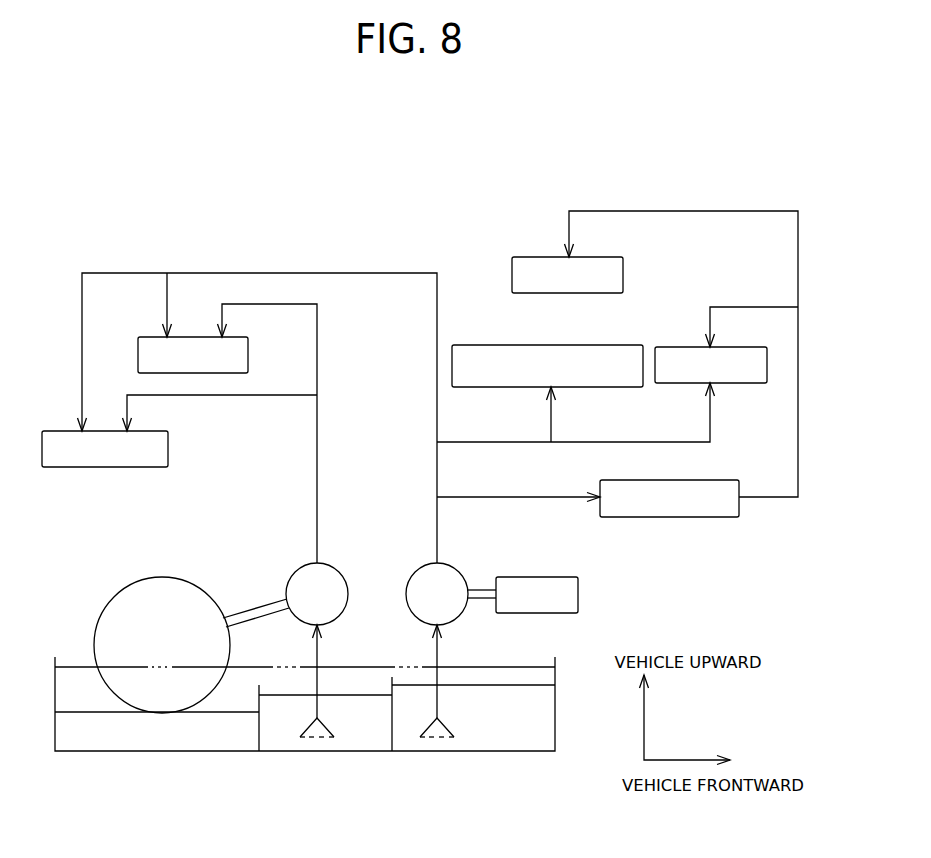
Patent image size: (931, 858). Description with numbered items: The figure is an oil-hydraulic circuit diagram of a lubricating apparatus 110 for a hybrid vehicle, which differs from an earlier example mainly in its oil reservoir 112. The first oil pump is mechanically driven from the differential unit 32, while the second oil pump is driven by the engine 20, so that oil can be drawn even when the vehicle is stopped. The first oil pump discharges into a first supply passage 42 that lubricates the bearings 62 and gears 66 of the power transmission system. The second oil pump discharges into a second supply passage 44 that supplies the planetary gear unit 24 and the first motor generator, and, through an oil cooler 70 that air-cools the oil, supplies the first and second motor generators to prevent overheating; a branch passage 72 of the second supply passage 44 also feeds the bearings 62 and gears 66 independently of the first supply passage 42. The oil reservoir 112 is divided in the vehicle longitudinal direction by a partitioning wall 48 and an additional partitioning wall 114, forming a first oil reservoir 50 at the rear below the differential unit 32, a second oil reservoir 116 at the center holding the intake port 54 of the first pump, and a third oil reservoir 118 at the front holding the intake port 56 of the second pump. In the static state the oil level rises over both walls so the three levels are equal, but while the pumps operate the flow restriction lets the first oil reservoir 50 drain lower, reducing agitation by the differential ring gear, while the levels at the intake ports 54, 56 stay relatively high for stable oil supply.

The lubricating apparatus 110 is at (712, 157).
The second supply passage 44 is at (452, 212).
The branch passage 72 is at (350, 272).
The gears 66 is at (153, 347).
The bearings 62 is at (62, 437).
The planetary gear unit 24 is at (532, 350).
The oil cooler 70 is at (697, 487).
The engine 20 is at (535, 580).
The differential unit 32 is at (138, 595).
The first supply passage 42 is at (263, 462).
The first oil reservoir 50 is at (150, 738).
The partitioning wall 48 is at (252, 733).
The second oil reservoir 116 is at (282, 737).
The intake port 54 is at (322, 740).
The partitioning wall 114 is at (390, 735).
The intake port 56 is at (443, 740).
The third oil reservoir 118 is at (512, 737).
The oil reservoir 112 is at (548, 770).